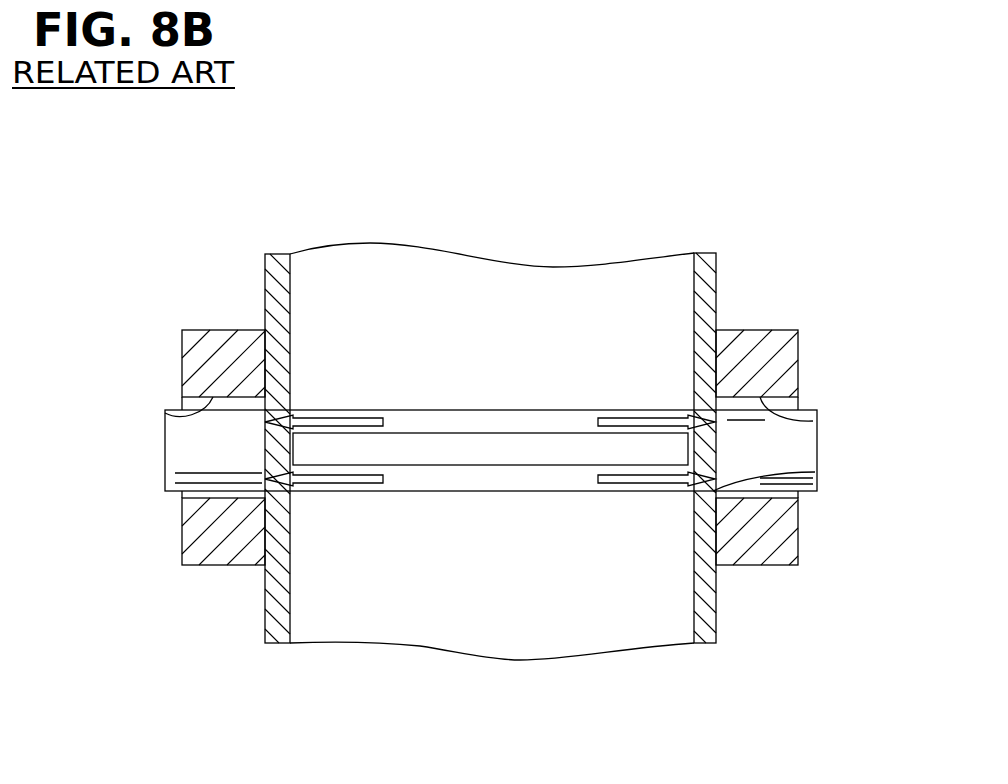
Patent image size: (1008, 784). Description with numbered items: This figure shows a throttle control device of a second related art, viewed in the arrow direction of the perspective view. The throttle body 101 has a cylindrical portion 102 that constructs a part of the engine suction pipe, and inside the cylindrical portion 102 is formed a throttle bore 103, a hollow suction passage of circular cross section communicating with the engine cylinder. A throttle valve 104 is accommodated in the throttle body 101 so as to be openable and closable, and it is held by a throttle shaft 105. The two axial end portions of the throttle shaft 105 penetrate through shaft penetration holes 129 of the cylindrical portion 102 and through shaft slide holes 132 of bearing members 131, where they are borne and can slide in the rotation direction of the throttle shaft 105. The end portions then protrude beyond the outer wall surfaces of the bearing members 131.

The throttle body 101 is at (248, 238).
The cylindrical portion 102 is at (278, 253).
The throttle bore 103 is at (562, 293).
The throttle valve 104 is at (432, 453).
The throttle shaft 105 is at (578, 492).
The shaft penetration hole 129 is at (270, 400).
The bearing member 131 is at (210, 343).
The shaft slide hole 132 is at (165, 413).